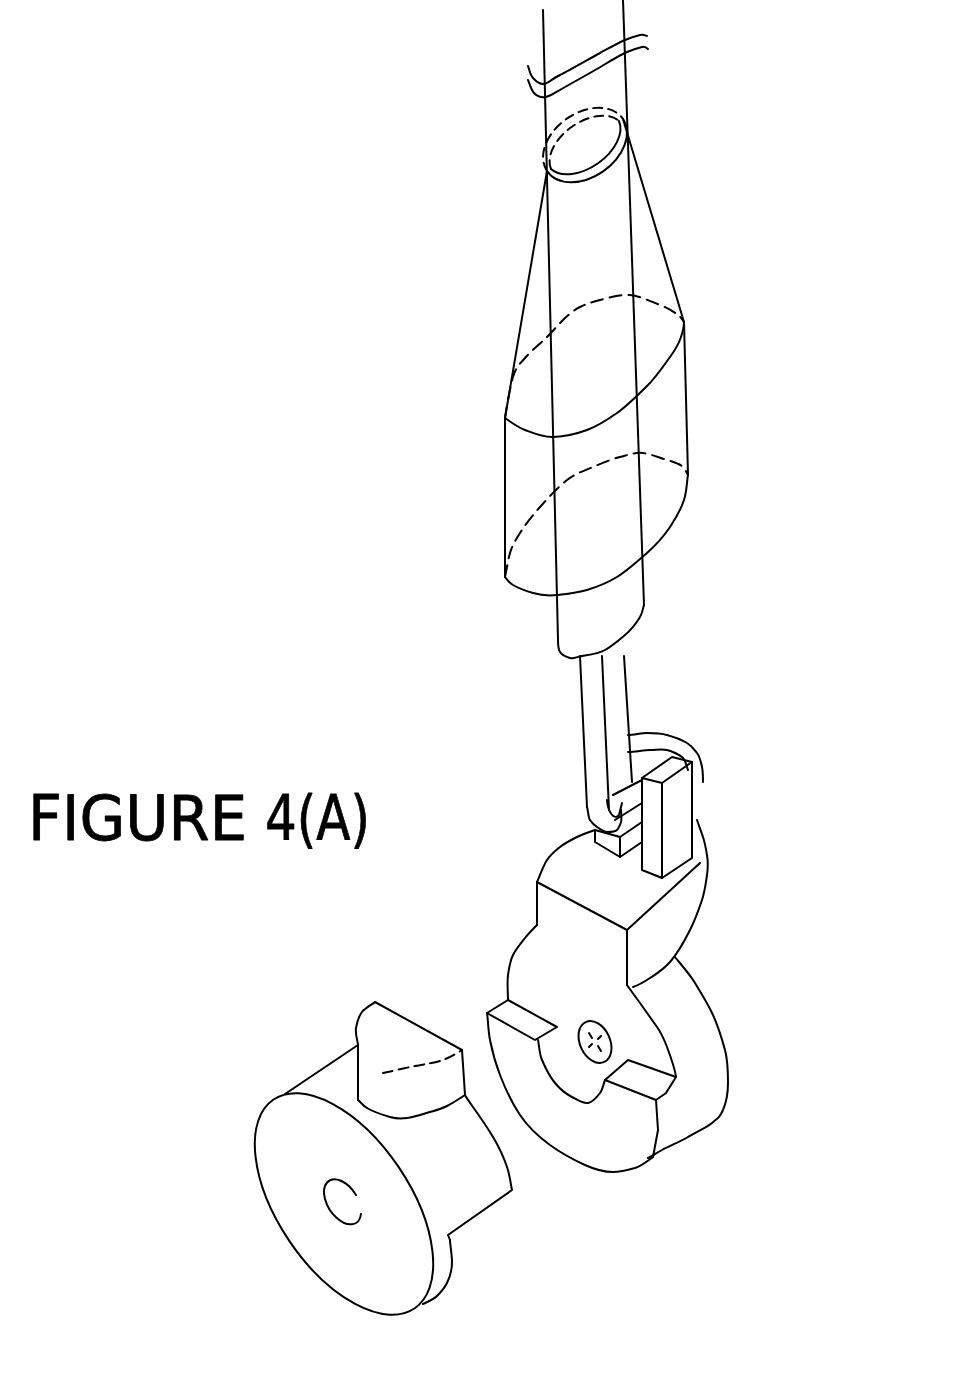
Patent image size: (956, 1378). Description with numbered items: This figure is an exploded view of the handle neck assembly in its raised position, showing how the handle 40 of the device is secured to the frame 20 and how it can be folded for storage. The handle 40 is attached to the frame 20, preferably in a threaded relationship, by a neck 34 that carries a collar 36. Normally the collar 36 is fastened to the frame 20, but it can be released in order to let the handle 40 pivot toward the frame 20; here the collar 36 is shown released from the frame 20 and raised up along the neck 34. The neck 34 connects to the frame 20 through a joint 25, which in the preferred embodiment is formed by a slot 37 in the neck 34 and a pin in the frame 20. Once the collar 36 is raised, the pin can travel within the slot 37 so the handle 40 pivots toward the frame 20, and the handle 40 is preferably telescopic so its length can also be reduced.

The frame 20 is at (693, 897).
The joint 25 is at (567, 825).
The neck 34 is at (682, 801).
The collar 36 is at (511, 476).
The slot 37 is at (617, 817).
The handle 40 is at (505, 132).